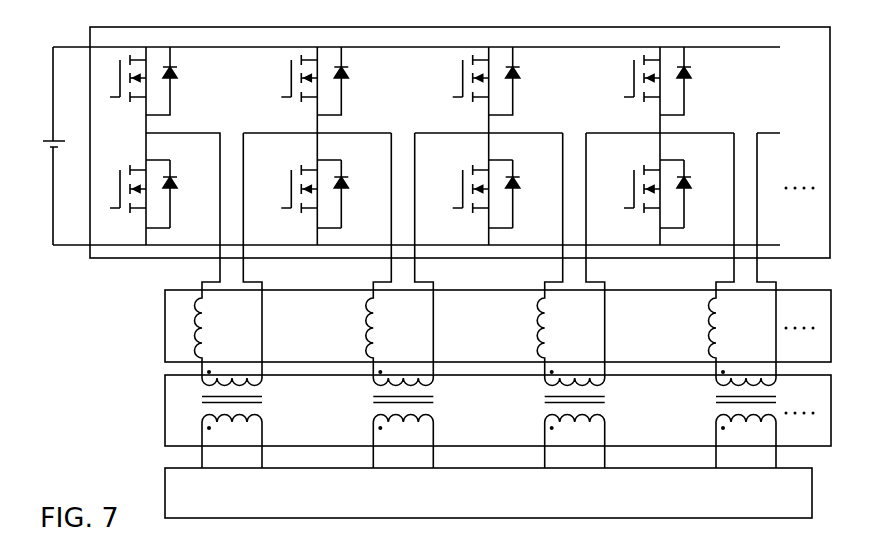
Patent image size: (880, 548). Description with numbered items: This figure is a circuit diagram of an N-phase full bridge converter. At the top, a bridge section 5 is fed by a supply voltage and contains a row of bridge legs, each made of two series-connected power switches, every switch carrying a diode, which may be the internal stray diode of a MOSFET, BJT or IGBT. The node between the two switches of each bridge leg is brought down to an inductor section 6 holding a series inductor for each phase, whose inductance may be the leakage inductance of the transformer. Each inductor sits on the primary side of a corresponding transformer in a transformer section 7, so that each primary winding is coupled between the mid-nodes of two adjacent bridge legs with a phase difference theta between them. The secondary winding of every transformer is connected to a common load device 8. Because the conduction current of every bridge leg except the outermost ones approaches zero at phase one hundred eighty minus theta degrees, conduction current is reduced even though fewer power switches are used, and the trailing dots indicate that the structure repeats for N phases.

The inverter circuit (switching bridge with Q1-Q8 and D1-D8) 5 is at (90, 43).
The series inductor module (Ls1-Ls4) 6 is at (165, 325).
The transformer module (T1-T4) 7 is at (165, 410).
The load device 8 is at (165, 483).